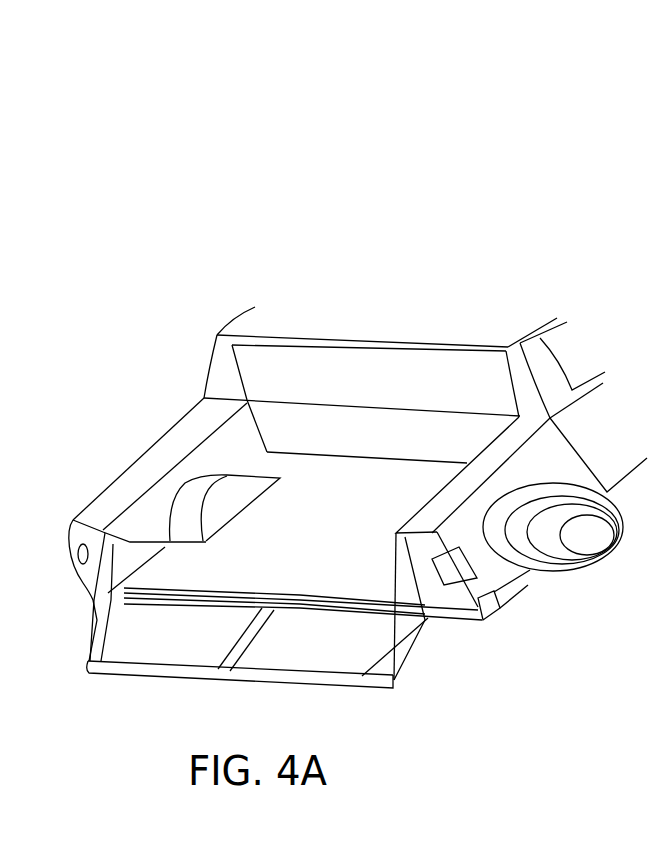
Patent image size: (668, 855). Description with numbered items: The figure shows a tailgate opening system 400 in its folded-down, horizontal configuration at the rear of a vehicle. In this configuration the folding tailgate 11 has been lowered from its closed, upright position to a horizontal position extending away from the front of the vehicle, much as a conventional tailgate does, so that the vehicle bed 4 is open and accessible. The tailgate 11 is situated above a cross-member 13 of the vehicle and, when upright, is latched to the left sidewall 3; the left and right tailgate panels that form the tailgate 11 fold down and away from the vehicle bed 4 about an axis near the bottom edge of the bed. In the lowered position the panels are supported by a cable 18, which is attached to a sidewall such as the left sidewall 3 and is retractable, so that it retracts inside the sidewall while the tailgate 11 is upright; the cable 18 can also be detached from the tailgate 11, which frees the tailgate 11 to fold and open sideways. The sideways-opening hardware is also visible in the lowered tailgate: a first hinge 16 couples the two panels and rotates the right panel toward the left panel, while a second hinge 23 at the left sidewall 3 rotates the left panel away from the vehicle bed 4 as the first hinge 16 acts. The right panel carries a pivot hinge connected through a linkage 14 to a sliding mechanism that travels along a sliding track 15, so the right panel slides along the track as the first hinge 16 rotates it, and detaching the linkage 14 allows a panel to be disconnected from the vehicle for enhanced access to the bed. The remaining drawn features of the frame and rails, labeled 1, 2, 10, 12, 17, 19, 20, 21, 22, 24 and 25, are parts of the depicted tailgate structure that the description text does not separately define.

The tailgate opening system 400 is at (190, 110).
The seat back 1 is at (376, 433).
The seat back side wing 2 is at (150, 463).
The left sidewall 3 is at (193, 472).
The vehicle bed 4 is at (310, 503).
The lower frame rail 10 is at (257, 683).
The tailgate 11 is at (167, 680).
The left leg inner member 12 is at (90, 613).
The cross-member 13 is at (87, 585).
The linkage 14 is at (380, 603).
The sliding track 15 is at (275, 592).
The first hinge 16 is at (275, 613).
The front cross member bottom rail 17 is at (248, 663).
The cable 18 is at (400, 647).
The left leg lower portion 19 is at (116, 650).
The right leg brace 20 is at (380, 662).
The cushion front edge 21 is at (117, 540).
The left side face member 22 is at (132, 610).
The second hinge 23 is at (133, 575).
The right leg lower end 24 is at (397, 680).
The rear panel 25 is at (380, 540).